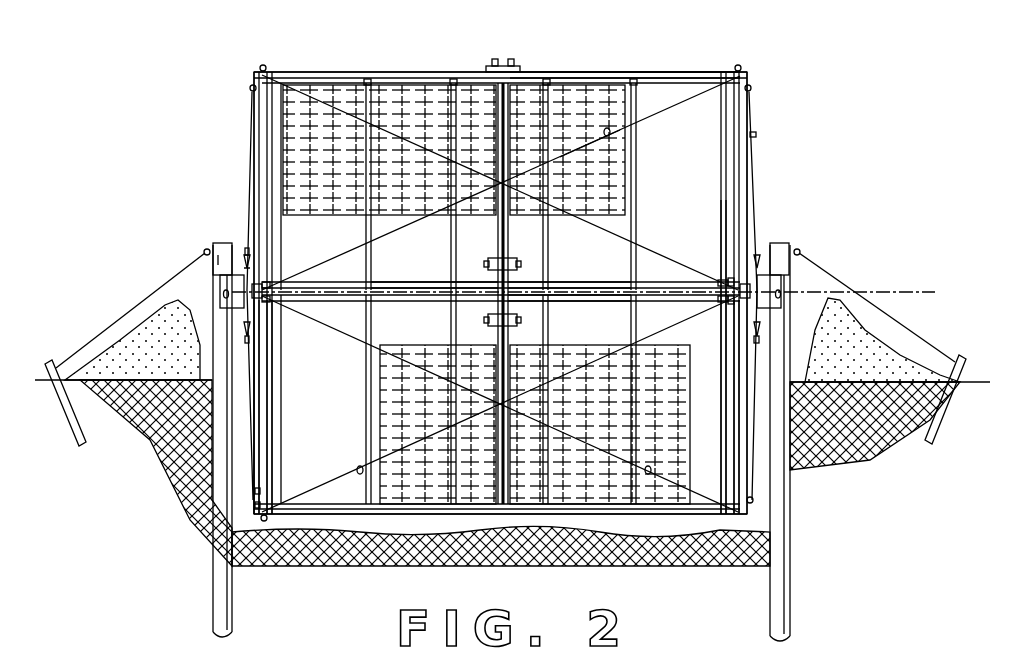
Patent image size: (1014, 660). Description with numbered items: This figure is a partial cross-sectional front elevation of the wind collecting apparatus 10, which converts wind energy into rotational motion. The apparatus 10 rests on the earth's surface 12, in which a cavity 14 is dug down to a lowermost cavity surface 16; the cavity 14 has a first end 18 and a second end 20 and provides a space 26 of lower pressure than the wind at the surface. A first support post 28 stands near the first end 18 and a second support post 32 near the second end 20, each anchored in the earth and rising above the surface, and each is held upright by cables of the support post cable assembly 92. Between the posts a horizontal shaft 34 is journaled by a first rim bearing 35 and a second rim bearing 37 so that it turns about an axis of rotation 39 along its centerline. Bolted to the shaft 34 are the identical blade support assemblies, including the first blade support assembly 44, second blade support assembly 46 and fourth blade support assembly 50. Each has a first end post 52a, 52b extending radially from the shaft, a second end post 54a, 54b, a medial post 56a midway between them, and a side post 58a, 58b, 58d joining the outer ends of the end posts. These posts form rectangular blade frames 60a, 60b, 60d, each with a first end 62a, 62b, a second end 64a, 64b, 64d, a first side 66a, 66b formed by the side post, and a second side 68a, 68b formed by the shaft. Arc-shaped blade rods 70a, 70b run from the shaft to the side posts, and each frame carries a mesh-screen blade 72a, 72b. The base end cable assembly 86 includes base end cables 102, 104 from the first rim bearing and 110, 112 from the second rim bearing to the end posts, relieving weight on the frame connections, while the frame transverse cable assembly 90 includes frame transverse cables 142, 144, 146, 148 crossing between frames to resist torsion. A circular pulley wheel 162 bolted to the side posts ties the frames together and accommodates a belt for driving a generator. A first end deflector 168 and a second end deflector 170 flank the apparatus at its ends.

The wind collecting apparatus 10 is at (712, 46).
The earth's surface 12 is at (42, 376).
The cavity 14 is at (302, 516).
The lowermost cavity surface 16 is at (362, 516).
The first end 18 is at (205, 505).
The second end 20 is at (800, 500).
The space 26 is at (250, 472).
The first support post 28 is at (220, 250).
The second support post 32 is at (780, 250).
The shaft 34 is at (721, 282).
The first rim bearing 35 is at (203, 253).
The second rim bearing 37 is at (722, 300).
The axis of rotation 39 is at (892, 292).
The first blade support assembly 44 is at (323, 70).
The second blade support assembly 46 is at (415, 512).
The fourth blade support assembly 50 is at (338, 295).
The first end post 52a is at (261, 135).
The first end post 52b is at (262, 432).
The second end post 54a is at (743, 108).
The second end post 54b is at (746, 462).
The medial post 56a is at (496, 105).
The side post 58a is at (568, 72).
The side post 58b is at (662, 514).
The side post 58d is at (393, 300).
The first blade frame 60a is at (368, 70).
The second blade frame 60b is at (368, 512).
The fourth blade frame 60d is at (617, 297).
The first end 62a is at (268, 178).
The first end 62b is at (270, 305).
The second end 64a is at (744, 150).
The second end 64b is at (750, 447).
The second end 64d is at (755, 258).
The first side 66a is at (600, 72).
The first side 66b is at (535, 514).
The second side 68a is at (430, 285).
The second side 68b is at (582, 300).
The blade rod 70a is at (282, 240).
The blade rod 70b is at (283, 402).
The blade 72a is at (410, 100).
The blade 72b is at (613, 478).
The base end cable assembly 86 is at (251, 155).
The frame transverse cable assembly 90 is at (397, 245).
The support post cable assembly 92 is at (97, 342).
The base end cable 102 is at (246, 210).
The base end cable 104 is at (250, 364).
The base end cable 110 is at (754, 135).
The base end cable 112 is at (752, 364).
The frame transverse cable 142 is at (650, 467).
The frame transverse cable 144 is at (359, 466).
The frame transverse cable 146 is at (598, 235).
The frame transverse cable 148 is at (607, 136).
The pulley wheel 162 is at (513, 62).
The first end deflector 168 is at (128, 345).
The second end deflector 170 is at (876, 335).